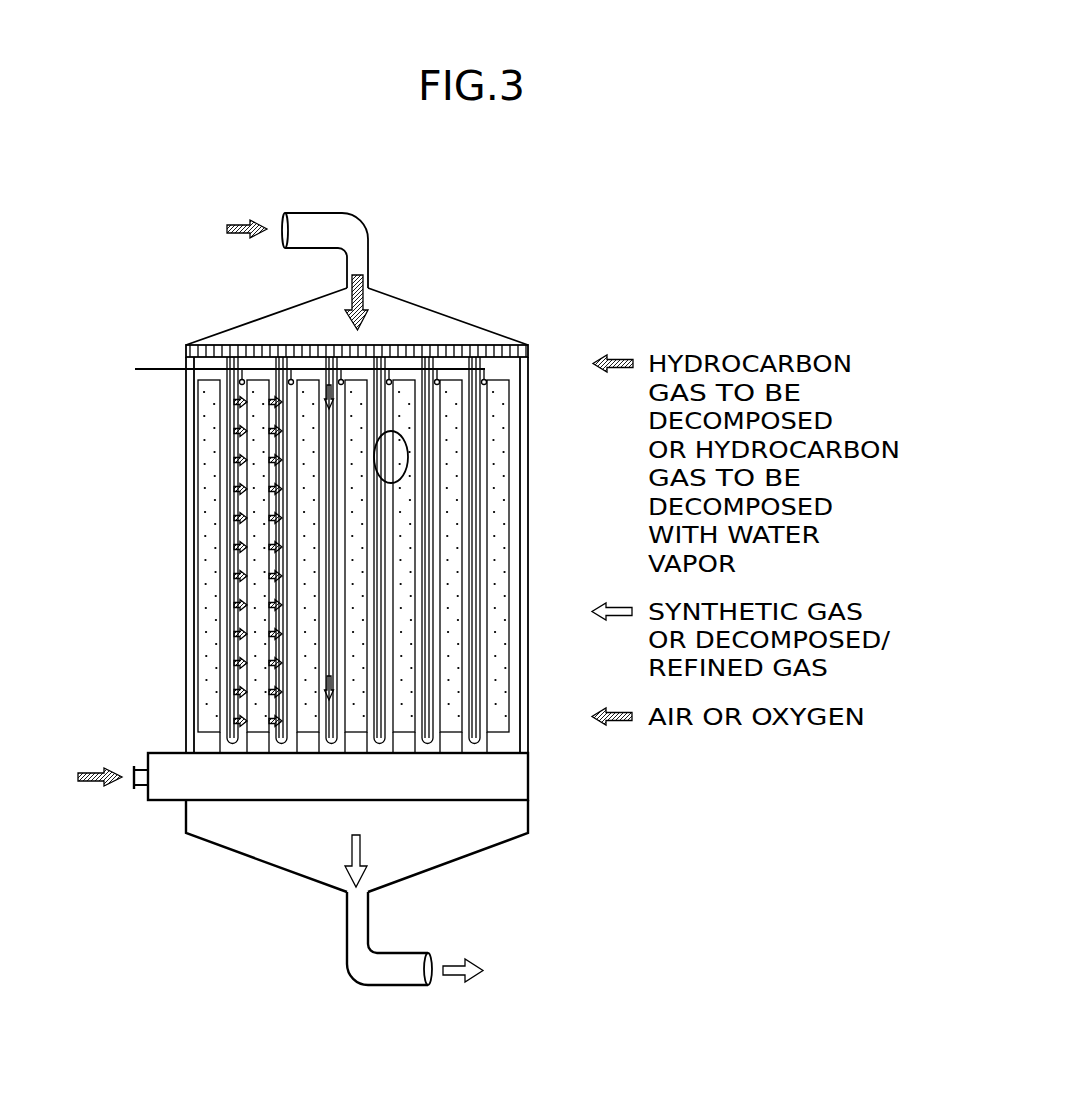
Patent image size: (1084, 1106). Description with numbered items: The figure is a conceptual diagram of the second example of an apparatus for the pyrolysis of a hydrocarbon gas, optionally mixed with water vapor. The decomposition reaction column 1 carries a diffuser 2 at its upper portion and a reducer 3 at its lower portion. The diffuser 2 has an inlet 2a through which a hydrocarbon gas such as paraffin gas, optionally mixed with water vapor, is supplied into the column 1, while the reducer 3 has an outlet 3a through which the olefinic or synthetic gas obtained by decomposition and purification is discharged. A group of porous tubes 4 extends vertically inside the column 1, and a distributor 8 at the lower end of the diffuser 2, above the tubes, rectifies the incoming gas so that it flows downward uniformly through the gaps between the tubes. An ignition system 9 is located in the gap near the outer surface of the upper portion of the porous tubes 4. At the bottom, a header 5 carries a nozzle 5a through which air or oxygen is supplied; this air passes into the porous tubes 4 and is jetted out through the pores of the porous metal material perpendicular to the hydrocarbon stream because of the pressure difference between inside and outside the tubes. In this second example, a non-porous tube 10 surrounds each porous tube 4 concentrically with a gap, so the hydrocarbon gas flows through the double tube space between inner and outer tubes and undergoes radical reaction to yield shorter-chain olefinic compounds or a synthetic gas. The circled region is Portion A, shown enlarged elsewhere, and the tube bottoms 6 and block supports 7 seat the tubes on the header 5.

The decomposition reaction column 1 is at (185, 679).
The diffuser 2 is at (436, 311).
The inlet 2a is at (312, 213).
The reducer 3 is at (468, 857).
The outlet 3a is at (383, 988).
The porous tube 4 is at (508, 598).
The header 5 is at (500, 777).
The nozzle 5a is at (140, 793).
The outer tube 6 is at (450, 722).
The catalyst block support 7 is at (505, 735).
The distributor 8 is at (497, 345).
The ignition system 9 is at (155, 368).
The non-porous tube 10 is at (380, 540).
The Portion A is at (408, 457).